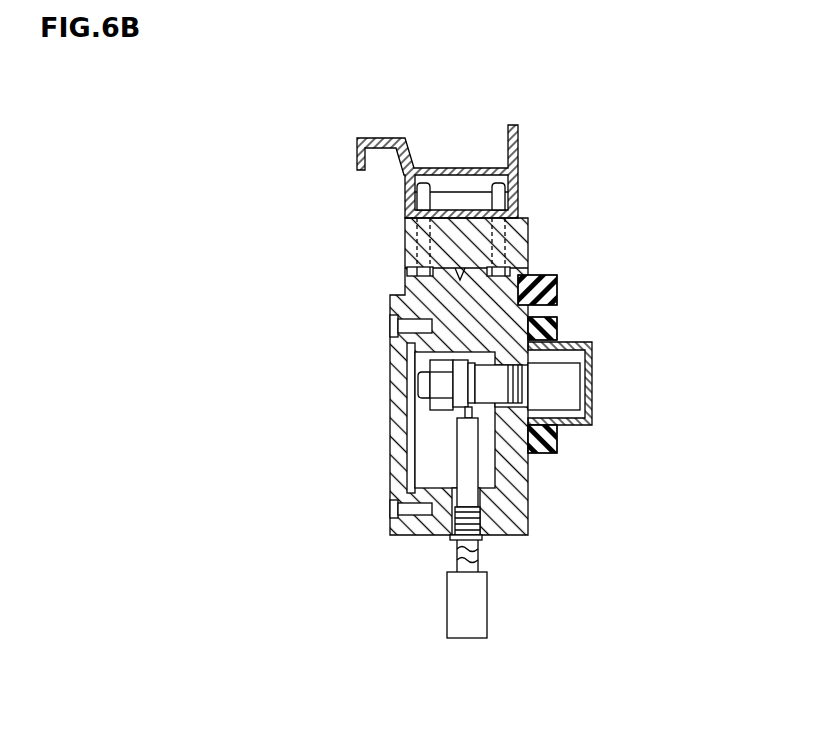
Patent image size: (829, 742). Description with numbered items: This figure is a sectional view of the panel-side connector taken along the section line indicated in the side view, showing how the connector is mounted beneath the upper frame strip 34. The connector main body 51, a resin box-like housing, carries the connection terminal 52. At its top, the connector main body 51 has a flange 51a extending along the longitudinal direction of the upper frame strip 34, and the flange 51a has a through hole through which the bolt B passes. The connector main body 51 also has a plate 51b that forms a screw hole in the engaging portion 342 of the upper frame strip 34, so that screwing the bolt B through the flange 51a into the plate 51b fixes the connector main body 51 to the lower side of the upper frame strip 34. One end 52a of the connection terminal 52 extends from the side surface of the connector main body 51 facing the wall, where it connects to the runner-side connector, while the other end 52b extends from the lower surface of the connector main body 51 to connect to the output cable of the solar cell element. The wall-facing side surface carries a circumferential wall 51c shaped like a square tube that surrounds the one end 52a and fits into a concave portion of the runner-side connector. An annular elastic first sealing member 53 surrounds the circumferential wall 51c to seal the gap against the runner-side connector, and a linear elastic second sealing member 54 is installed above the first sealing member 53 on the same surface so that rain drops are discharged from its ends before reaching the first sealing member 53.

The upper frame strip 34 is at (382, 136).
The connector main body 51 is at (523, 498).
The flange 51a is at (450, 287).
The plate 51b is at (460, 190).
The circumferential wall 51c is at (572, 345).
The connection terminal 52 is at (455, 433).
The one end of the connection terminal 52a is at (568, 382).
The other end of the connection terminal 52b is at (473, 603).
The first sealing member 53 is at (558, 442).
The second sealing member 54 is at (557, 283).
The engaging portion 342 is at (487, 183).
The bolt B is at (403, 269).